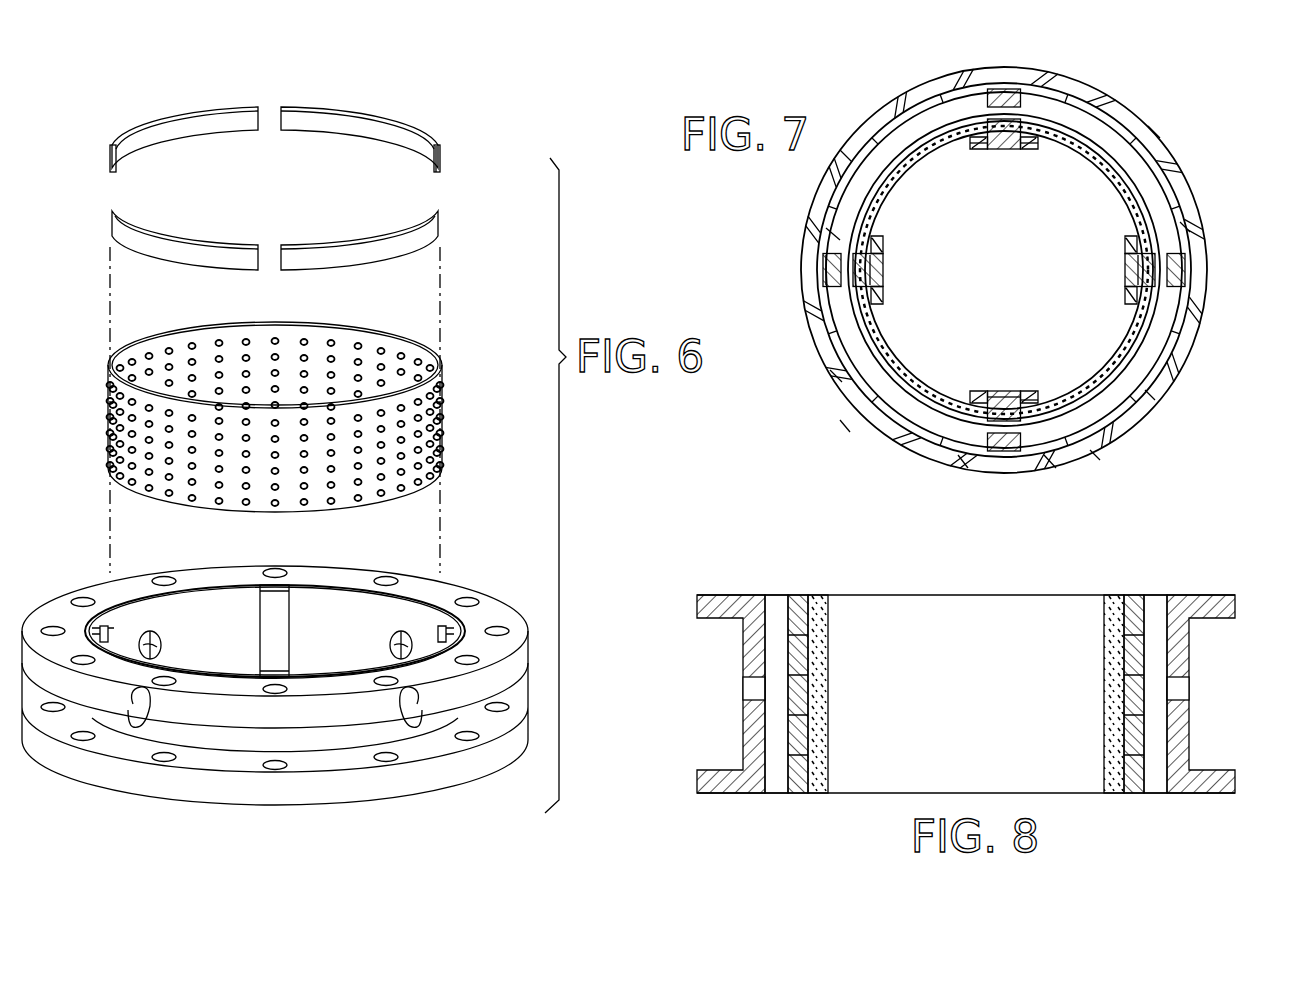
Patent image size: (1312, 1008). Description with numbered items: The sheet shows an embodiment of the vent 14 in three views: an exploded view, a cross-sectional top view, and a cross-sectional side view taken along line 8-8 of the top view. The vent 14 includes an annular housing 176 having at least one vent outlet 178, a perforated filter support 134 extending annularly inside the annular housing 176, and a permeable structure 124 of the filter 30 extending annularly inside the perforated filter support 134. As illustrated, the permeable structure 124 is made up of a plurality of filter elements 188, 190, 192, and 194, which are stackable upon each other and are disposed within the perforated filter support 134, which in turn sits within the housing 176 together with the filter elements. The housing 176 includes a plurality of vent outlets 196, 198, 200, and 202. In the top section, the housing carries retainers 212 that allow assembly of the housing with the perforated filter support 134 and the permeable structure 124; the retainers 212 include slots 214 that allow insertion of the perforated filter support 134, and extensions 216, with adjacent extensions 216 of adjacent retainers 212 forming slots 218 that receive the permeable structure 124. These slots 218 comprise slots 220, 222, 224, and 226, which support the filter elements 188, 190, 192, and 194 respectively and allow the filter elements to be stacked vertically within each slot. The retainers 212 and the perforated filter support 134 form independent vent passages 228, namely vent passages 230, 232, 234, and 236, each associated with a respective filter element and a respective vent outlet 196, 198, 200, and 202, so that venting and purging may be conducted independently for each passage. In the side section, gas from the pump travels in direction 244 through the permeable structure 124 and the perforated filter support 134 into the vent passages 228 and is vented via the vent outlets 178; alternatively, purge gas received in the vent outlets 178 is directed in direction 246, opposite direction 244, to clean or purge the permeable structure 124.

In FIG. 6, the vent 14 is at (45, 178).
In FIG. 7, the vent 14 is at (1224, 118).
In FIG. 8, the vent 14 is at (662, 628).
In FIG. 6, the filter 30 is at (432, 104).
In FIG. 7, the filter 30 is at (1122, 346).
In FIG. 8, the filter 30 is at (788, 800).
In FIG. 6, the permeable structure 124 is at (436, 140).
In FIG. 7, the permeable structure 124 is at (1004, 270).
In FIG. 8, the permeable structure 124 is at (818, 598).
In FIG. 6, the perforated filter support 134 is at (445, 412).
In FIG. 7, the perforated filter support 134 is at (1120, 420).
In FIG. 8, the perforated filter support 134 is at (798, 596).
In FIG. 6, the annular housing 176 is at (330, 740).
In FIG. 7, the annular housing 176 is at (1200, 300).
In FIG. 8, the annular housing 176 is at (722, 796).
In FIG. 6, the vent outlet 178 is at (182, 625).
In FIG. 7, the vent outlet 178 is at (844, 426).
In FIG. 8, the vent outlet 178 is at (752, 690).
In FIG. 6, the filter element 188 is at (180, 248).
In FIG. 7, the filter element 188 is at (906, 432).
In FIG. 6, the filter element 190 is at (362, 248).
In FIG. 7, the filter element 190 is at (1176, 345).
In FIG. 6, the filter element 192 is at (312, 110).
In FIG. 7, the filter element 192 is at (1170, 180).
In FIG. 6, the filter element 194 is at (165, 118).
In FIG. 7, the filter element 194 is at (908, 150).
In FIG. 6, the vent outlet 196 is at (133, 727).
In FIG. 7, the vent outlet 196 is at (836, 376).
In FIG. 6, the vent outlet 198 is at (412, 727).
In FIG. 7, the vent outlet 198 is at (1150, 396).
In FIG. 6, the vent outlet 200 is at (392, 645).
In FIG. 7, the vent outlet 200 is at (1152, 128).
In FIG. 6, the vent outlet 202 is at (148, 638).
In FIG. 7, the vent outlet 202 is at (846, 150).
In FIG. 7, the retainer 212 is at (1125, 260).
In FIG. 7, the slot 214 is at (832, 268).
In FIG. 7, the extension 216 is at (984, 400).
In FIG. 7, the slot 218 is at (1130, 302).
In FIG. 7, the slot 220 is at (1032, 398).
In FIG. 7, the slot 222 is at (884, 266).
In FIG. 7, the slot 224 is at (962, 146).
In FIG. 7, the slot 226 is at (1036, 146).
In FIG. 7, the independent vent passage 228 is at (1050, 463).
In FIG. 8, the independent vent passage 228 is at (777, 598).
In FIG. 7, the vent passage 230 is at (964, 463).
In FIG. 7, the vent passage 232 is at (1096, 456).
In FIG. 7, the vent passage 234 is at (1186, 222).
In FIG. 7, the vent passage 236 is at (834, 232).
In FIG. 8, the direction 244 is at (847, 688).
In FIG. 8, the direction 246 is at (897, 718).
In FIG. 7, the section line 8 is at (1181, 132).